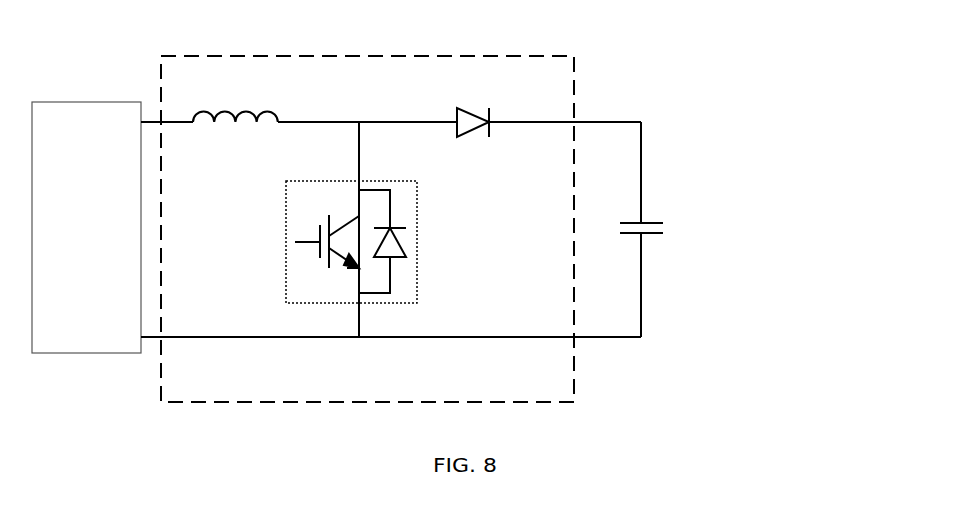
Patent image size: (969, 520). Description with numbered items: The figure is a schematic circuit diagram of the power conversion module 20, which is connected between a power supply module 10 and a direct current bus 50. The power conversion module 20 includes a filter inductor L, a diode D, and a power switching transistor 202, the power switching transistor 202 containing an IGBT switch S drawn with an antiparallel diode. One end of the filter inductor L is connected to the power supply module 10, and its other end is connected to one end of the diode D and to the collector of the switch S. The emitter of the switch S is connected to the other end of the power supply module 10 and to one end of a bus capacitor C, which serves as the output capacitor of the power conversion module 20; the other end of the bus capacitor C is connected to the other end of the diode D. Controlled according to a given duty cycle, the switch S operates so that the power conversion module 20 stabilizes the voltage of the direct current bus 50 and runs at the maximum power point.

The power supply module 10 is at (86, 227).
The power conversion module 20 is at (391, 229).
The direct current bus 50 is at (600, 122).
The power switching transistor 202 is at (380, 180).